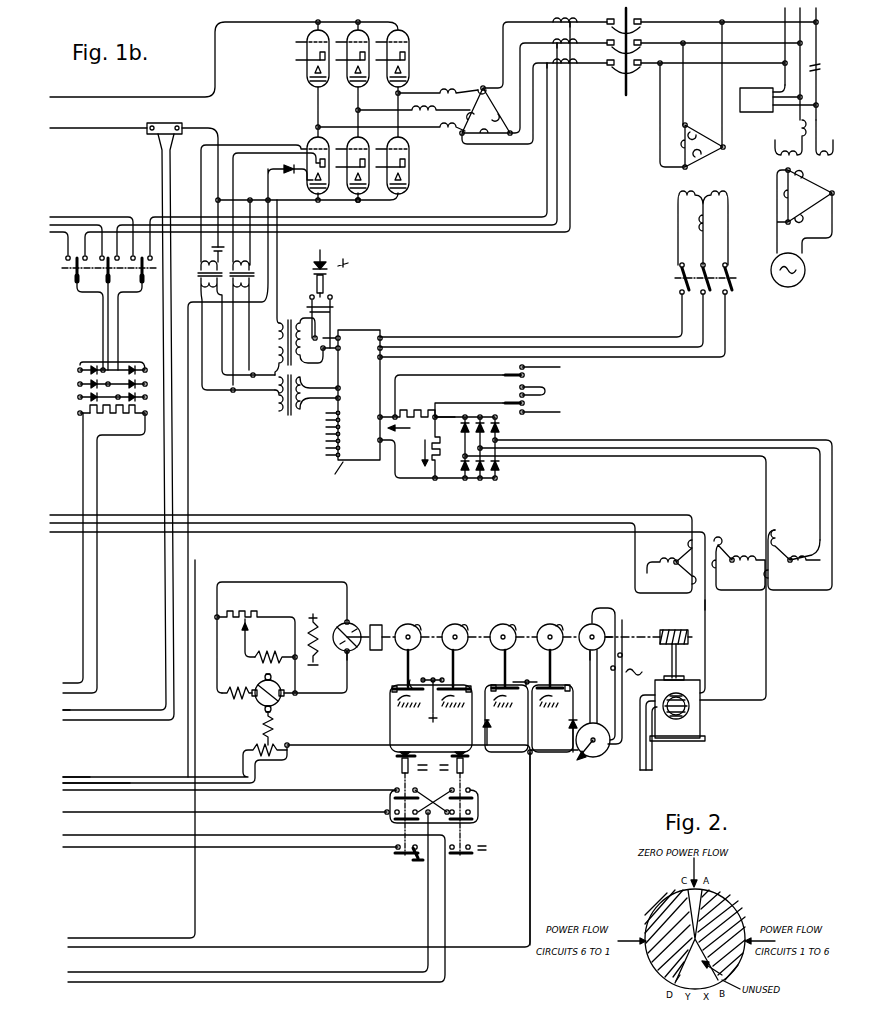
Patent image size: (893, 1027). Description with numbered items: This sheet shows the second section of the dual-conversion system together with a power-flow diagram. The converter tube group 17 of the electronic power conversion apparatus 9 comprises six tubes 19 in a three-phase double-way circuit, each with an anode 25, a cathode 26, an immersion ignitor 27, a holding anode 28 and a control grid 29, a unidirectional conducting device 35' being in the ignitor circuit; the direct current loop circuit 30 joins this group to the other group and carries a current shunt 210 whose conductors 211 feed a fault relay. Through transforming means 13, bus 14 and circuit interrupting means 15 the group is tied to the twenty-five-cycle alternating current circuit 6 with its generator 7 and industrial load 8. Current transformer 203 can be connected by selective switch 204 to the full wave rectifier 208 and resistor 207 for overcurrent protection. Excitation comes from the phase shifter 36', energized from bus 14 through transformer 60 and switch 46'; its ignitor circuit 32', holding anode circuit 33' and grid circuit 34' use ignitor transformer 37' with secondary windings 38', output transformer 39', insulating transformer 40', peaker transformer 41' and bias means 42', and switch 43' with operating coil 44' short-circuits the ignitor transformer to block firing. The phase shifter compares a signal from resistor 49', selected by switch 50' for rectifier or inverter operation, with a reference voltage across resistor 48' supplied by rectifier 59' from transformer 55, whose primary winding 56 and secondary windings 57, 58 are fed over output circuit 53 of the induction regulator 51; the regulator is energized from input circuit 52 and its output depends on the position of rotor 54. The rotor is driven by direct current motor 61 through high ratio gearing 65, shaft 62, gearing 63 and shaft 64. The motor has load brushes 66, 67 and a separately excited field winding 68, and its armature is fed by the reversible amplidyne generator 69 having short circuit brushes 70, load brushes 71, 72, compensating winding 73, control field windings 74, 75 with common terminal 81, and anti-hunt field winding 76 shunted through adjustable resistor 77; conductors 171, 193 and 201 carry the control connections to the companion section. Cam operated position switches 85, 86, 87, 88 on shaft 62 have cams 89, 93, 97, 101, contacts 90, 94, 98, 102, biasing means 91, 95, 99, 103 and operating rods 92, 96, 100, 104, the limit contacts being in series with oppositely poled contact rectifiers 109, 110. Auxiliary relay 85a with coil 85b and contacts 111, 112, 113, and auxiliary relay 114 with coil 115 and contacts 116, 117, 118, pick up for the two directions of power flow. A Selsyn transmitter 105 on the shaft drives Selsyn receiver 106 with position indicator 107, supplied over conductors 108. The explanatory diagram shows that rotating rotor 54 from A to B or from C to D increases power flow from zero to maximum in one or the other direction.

In FIG. 1B, the electronic power conversion apparatus 9 is at (181, 79).
In FIG. 1B, the direct current loop circuit 30 is at (83, 128).
In FIG. 1B, the current shunt 210 is at (163, 122).
In FIG. 1B, the selective switch 204 is at (75, 281).
In FIG. 1B, the full wave rectifier 208 is at (84, 368).
In FIG. 1B, the resistor 207 is at (119, 416).
In FIG. 1B, the conductors 211 is at (122, 712).
In FIG. 1B, the tubes 19 is at (325, 40).
In FIG. 1B, the converter tube group 17 is at (343, 110).
In FIG. 1B, the anode 25 is at (314, 140).
In FIG. 1B, the control electrode or grid 29 is at (304, 146).
In FIG. 1B, the holding anode 28 is at (316, 161).
In FIG. 1B, the immersion ignitor 27 is at (310, 182).
In FIG. 1B, the cathode 26 is at (350, 195).
In FIG. 1B, the unidirectional conducting device 35' is at (241, 464).
In FIG. 1B, the transforming means 13 is at (474, 77).
In FIG. 1B, the current transformer 203 is at (556, 20).
In FIG. 1B, the circuit interrupting means 15 is at (622, 20).
In FIG. 1B, the bus 14 is at (760, 17).
In FIG. 1B, the second alternating current circuit 6 is at (819, 67).
In FIG. 1B, the industrial load 8 is at (760, 112).
In FIG. 1B, the transformer 60 is at (710, 182).
In FIG. 1B, the dynamo-electric generator 7 is at (805, 274).
In FIG. 1B, the switch 46' is at (559, 310).
In FIG. 1B, the rectifier 42' is at (203, 249).
In FIG. 1B, the grid circuit 34' is at (202, 264).
In FIG. 1B, the transformer winding 41' is at (228, 333).
In FIG. 1B, the holding anode circuit 33' is at (242, 238).
In FIG. 1B, the transformer winding 40' is at (262, 327).
In FIG. 1B, the ignitor circuit 32' is at (284, 261).
In FIG. 1B, the ignitor transformer 37' is at (300, 335).
In FIG. 1B, the transformer winding 38' is at (269, 361).
In FIG. 1B, the transformer 39' is at (306, 403).
In FIG. 1B, the operating coil 44' is at (330, 256).
In FIG. 1B, the ignitor short-circuiting switch 43' is at (329, 312).
In FIG. 1B, the excitation means 36' is at (331, 398).
In FIG. 1B, the resistor 49' is at (441, 403).
In FIG. 1B, the resistor 48' is at (441, 447).
In FIG. 1B, the switch 50' is at (529, 390).
In FIG. 1B, the rectifier 59' is at (606, 551).
In FIG. 1B, the transformer 55 is at (735, 509).
In FIG. 1B, the secondary winding 57 is at (673, 559).
In FIG. 1B, the primary winding 56 is at (740, 557).
In FIG. 1B, the secondary winding 58 is at (798, 557).
In FIG. 1B, the output circuit 53 is at (790, 651).
In FIG. 1B, the adjustable resistor 77 is at (243, 612).
In FIG. 1B, the anti-hunt field winding 76 is at (267, 652).
In FIG. 1B, the short circuit brushes 70 is at (263, 675).
In FIG. 1B, the compensating winding 73 is at (222, 695).
In FIG. 1B, the load brush 72 is at (252, 696).
In FIG. 1B, the reversible polarity direct current generator 69 is at (276, 709).
In FIG. 1B, the load brush 71 is at (298, 695).
In FIG. 1B, the control field winding 74 is at (283, 727).
In FIG. 1B, the control field winding 75 is at (176, 757).
In FIG. 1B, the common terminal 81 is at (290, 752).
In FIG. 1B, the conductor 171 is at (78, 776).
In FIG. 1B, the conductor 193 is at (118, 782).
In FIG. 1B, the conductor 201 is at (105, 937).
In FIG. 1B, the load brush 67 is at (340, 624).
In FIG. 1B, the direct current motor 61 is at (352, 623).
In FIG. 1B, the field winding 68 is at (315, 658).
In FIG. 1B, the load brush 66 is at (350, 654).
In FIG. 1B, the high ratio gearing 65 is at (376, 625).
In FIG. 1B, the position switch 85 is at (408, 622).
In FIG. 1B, the cam member 89 is at (420, 629).
In FIG. 1B, the position switch 86 is at (458, 620).
In FIG. 1B, the cam 93 is at (467, 628).
In FIG. 1B, the limit switch 87 is at (505, 618).
In FIG. 1B, the cam 97 is at (515, 628).
In FIG. 1B, the limit switch 88 is at (551, 617).
In FIG. 1B, the cam 101 is at (560, 630).
In FIG. 1B, the Selsyn transmitter 105 is at (588, 650).
In FIG. 1B, the contact operating means 104 is at (554, 668).
In FIG. 1B, the shaft 62 is at (636, 634).
In FIG. 1B, the gearing 63 is at (670, 630).
In FIG. 1B, the shaft 64 is at (671, 657).
In FIG. 1B, the three phase induction regulator 51 is at (718, 728).
In FIG. 1B, the rotatable element 54 is at (682, 694).
In FIG. 2, the rotatable element 54 is at (728, 903).
In FIG. 1B, the input circuit 52 is at (654, 766).
In FIG. 1B, the Selsyn receiver 106 is at (600, 760).
In FIG. 1B, the position indicating means 107 is at (580, 766).
In FIG. 1B, the conductors 108 is at (628, 680).
In FIG. 1B, the contact operating means 92 is at (404, 670).
In FIG. 1B, the switch contacts 90 is at (414, 678).
In FIG. 1B, the switch contacts 94 is at (440, 678).
In FIG. 1B, the contact operating means 96 is at (456, 672).
In FIG. 1B, the contact operating means 100 is at (500, 674).
In FIG. 1B, the switch contacts 98 is at (512, 678).
In FIG. 1B, the switch contacts 102 is at (540, 678).
In FIG. 1B, the switch biasing means 91 is at (431, 718).
In FIG. 1B, the switch biasing means 95 is at (442, 712).
In FIG. 1B, the switch biasing means 99 is at (506, 718).
In FIG. 1B, the switch biasing means 103 is at (552, 718).
In FIG. 1B, the contact rectifier 109 is at (489, 731).
In FIG. 1B, the contact rectifier 110 is at (568, 725).
In FIG. 1B, the auxiliary relay 85a is at (406, 757).
In FIG. 1B, the operating coil 85b is at (400, 760).
In FIG. 1B, the auxiliary relay 114 is at (456, 757).
In FIG. 1B, the operating coil 115 is at (466, 762).
In FIG. 1B, the relay contacts 111 is at (395, 789).
In FIG. 1B, the relay contacts 112 is at (395, 810).
In FIG. 1B, the relay contacts 113 is at (395, 848).
In FIG. 1B, the relay contacts 116 is at (470, 790).
In FIG. 1B, the relay contacts 117 is at (470, 812).
In FIG. 1B, the relay contacts 118 is at (470, 846).